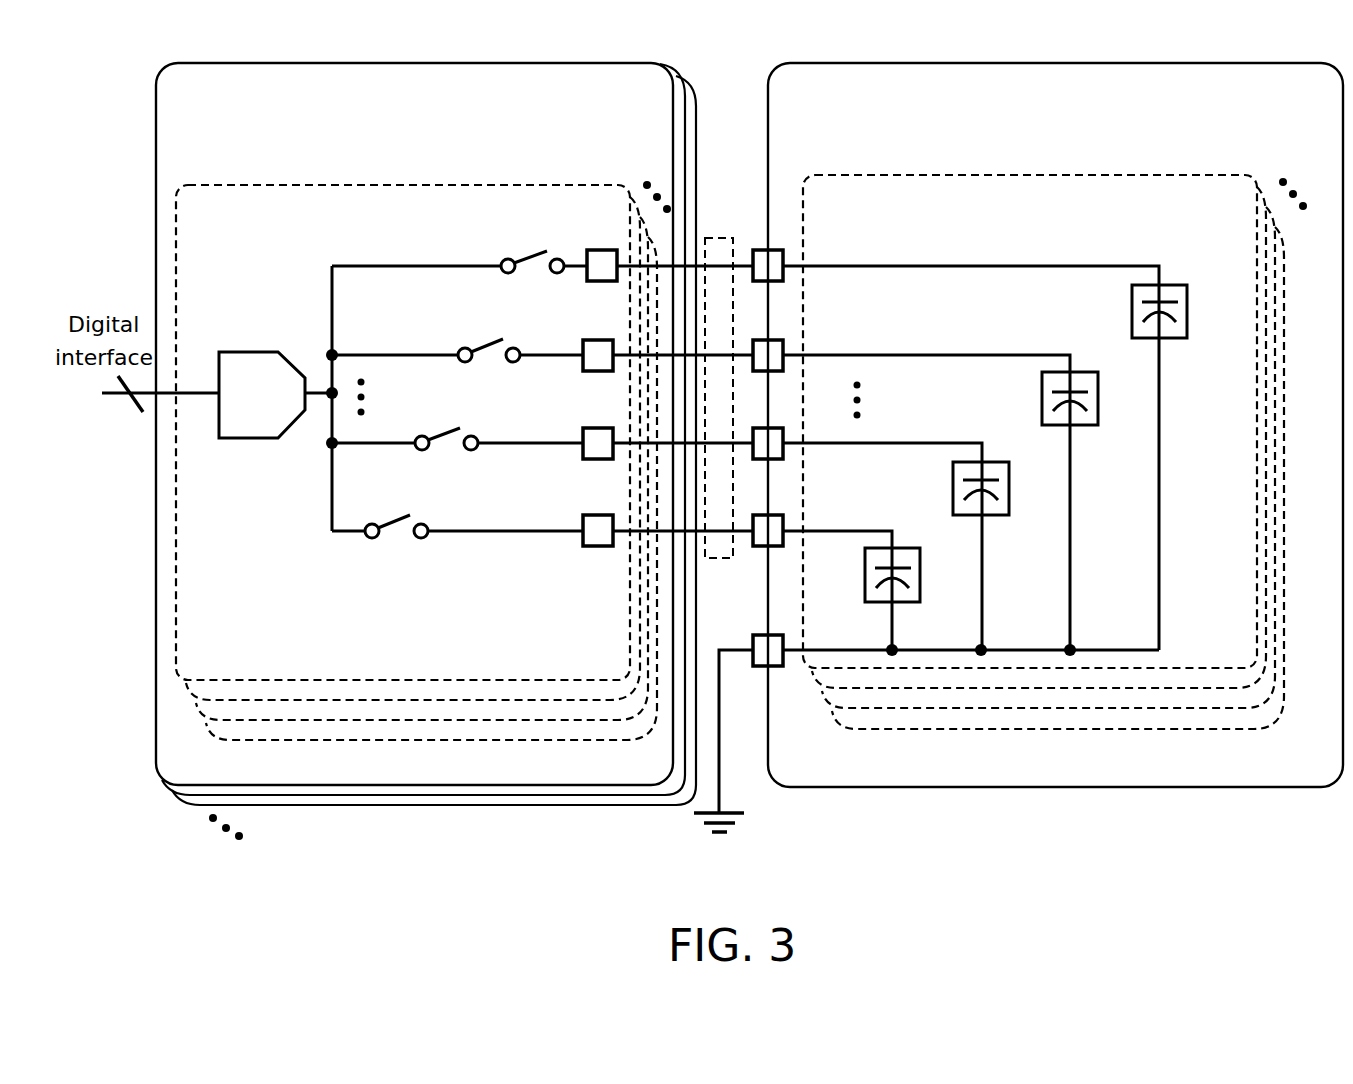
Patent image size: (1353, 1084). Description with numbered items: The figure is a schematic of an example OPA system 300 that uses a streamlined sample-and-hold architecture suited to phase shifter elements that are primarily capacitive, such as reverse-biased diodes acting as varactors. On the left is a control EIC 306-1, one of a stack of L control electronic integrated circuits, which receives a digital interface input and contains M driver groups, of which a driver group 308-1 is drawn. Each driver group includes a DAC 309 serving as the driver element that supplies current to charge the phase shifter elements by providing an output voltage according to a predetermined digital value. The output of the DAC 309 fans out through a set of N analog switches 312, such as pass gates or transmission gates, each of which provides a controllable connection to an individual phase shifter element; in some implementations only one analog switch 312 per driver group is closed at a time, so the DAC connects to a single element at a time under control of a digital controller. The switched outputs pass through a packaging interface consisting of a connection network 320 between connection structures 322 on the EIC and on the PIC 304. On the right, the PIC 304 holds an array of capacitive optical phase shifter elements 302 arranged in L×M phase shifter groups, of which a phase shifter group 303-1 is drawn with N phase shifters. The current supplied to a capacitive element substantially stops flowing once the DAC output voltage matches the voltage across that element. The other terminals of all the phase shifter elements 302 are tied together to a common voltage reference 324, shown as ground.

The OPA system 300 is at (744, 60).
The control EIC 306-1 is at (636, 101).
The PIC 304 is at (1006, 121).
The driver group 308-1 is at (266, 280).
The phase shifter group 303-1 is at (1198, 212).
The DAC 309 is at (286, 440).
The analog switch 312 is at (541, 294).
The connection structure 322 is at (606, 249).
The connection network 320 is at (727, 237).
The capacitive optical phase shifter element 302 is at (1187, 335).
The common voltage reference 324 is at (758, 788).